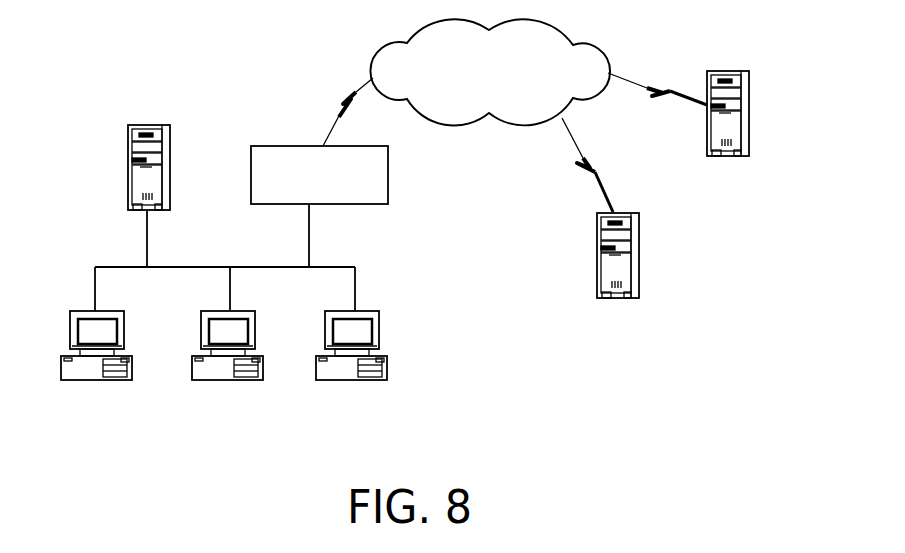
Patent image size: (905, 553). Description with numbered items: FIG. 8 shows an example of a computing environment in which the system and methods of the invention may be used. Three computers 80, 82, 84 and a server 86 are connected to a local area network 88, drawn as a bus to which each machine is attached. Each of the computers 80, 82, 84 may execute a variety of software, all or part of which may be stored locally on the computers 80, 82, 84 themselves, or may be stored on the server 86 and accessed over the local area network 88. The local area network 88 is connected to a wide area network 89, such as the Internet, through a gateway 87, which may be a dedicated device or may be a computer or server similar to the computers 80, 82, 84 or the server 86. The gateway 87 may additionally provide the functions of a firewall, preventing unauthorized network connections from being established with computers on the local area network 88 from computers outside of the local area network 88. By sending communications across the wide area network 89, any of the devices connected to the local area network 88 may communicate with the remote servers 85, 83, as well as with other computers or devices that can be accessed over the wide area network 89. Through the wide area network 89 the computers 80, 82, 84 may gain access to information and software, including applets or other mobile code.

The computer 80 is at (80, 370).
The computer 82 is at (210, 370).
The remote server 83 is at (747, 103).
The computer 84 is at (332, 371).
The remote server 85 is at (636, 245).
The server 86 is at (136, 123).
The gateway 87 is at (373, 183).
The local area network 88 is at (355, 286).
The wide area network 89 is at (400, 70).